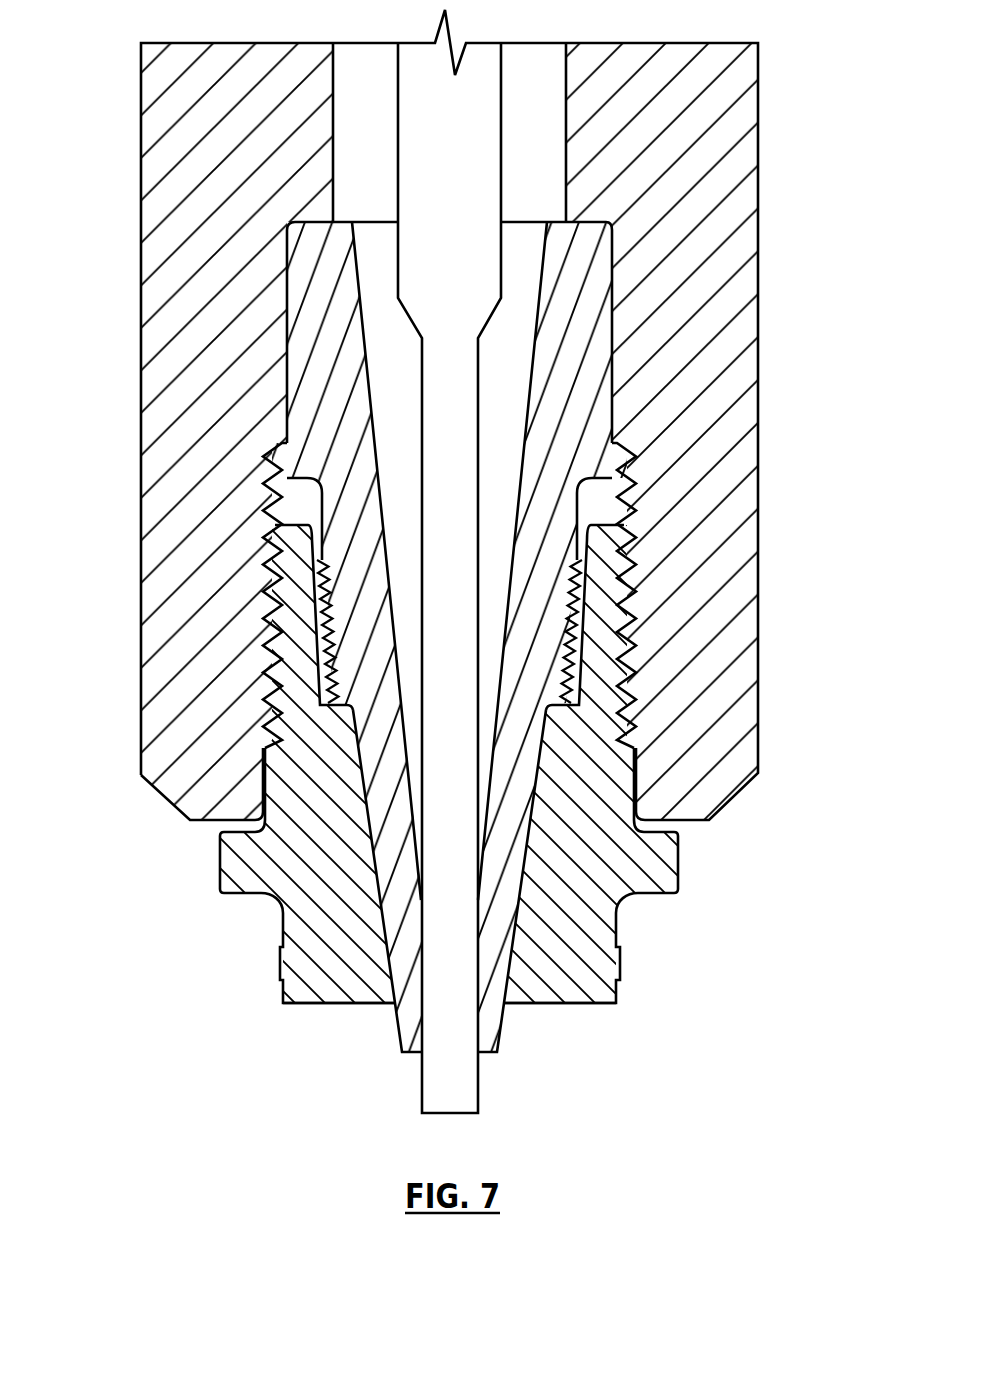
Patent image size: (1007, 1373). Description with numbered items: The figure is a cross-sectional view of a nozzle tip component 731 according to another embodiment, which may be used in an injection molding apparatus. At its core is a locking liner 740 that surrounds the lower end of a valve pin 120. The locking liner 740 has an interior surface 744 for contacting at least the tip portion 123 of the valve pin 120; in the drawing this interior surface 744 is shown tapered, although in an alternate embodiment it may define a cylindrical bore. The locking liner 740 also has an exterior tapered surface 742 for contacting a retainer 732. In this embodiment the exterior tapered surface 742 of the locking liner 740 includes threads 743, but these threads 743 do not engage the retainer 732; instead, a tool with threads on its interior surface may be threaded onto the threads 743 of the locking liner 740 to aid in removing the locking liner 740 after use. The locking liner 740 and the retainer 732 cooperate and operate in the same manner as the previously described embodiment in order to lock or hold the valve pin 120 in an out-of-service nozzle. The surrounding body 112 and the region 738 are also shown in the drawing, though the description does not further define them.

The injector body 112 is at (677, 140).
The valve pin 120 is at (453, 475).
The tip portion 123 is at (422, 1087).
The nozzle tip component 731 is at (577, 1063).
The retainer 732 is at (577, 938).
The seat 738 is at (362, 800).
The locking liner 740 is at (515, 790).
The exterior tapered surface 742 is at (525, 862).
The threads 743 is at (317, 633).
The interior surface 744 is at (490, 732).